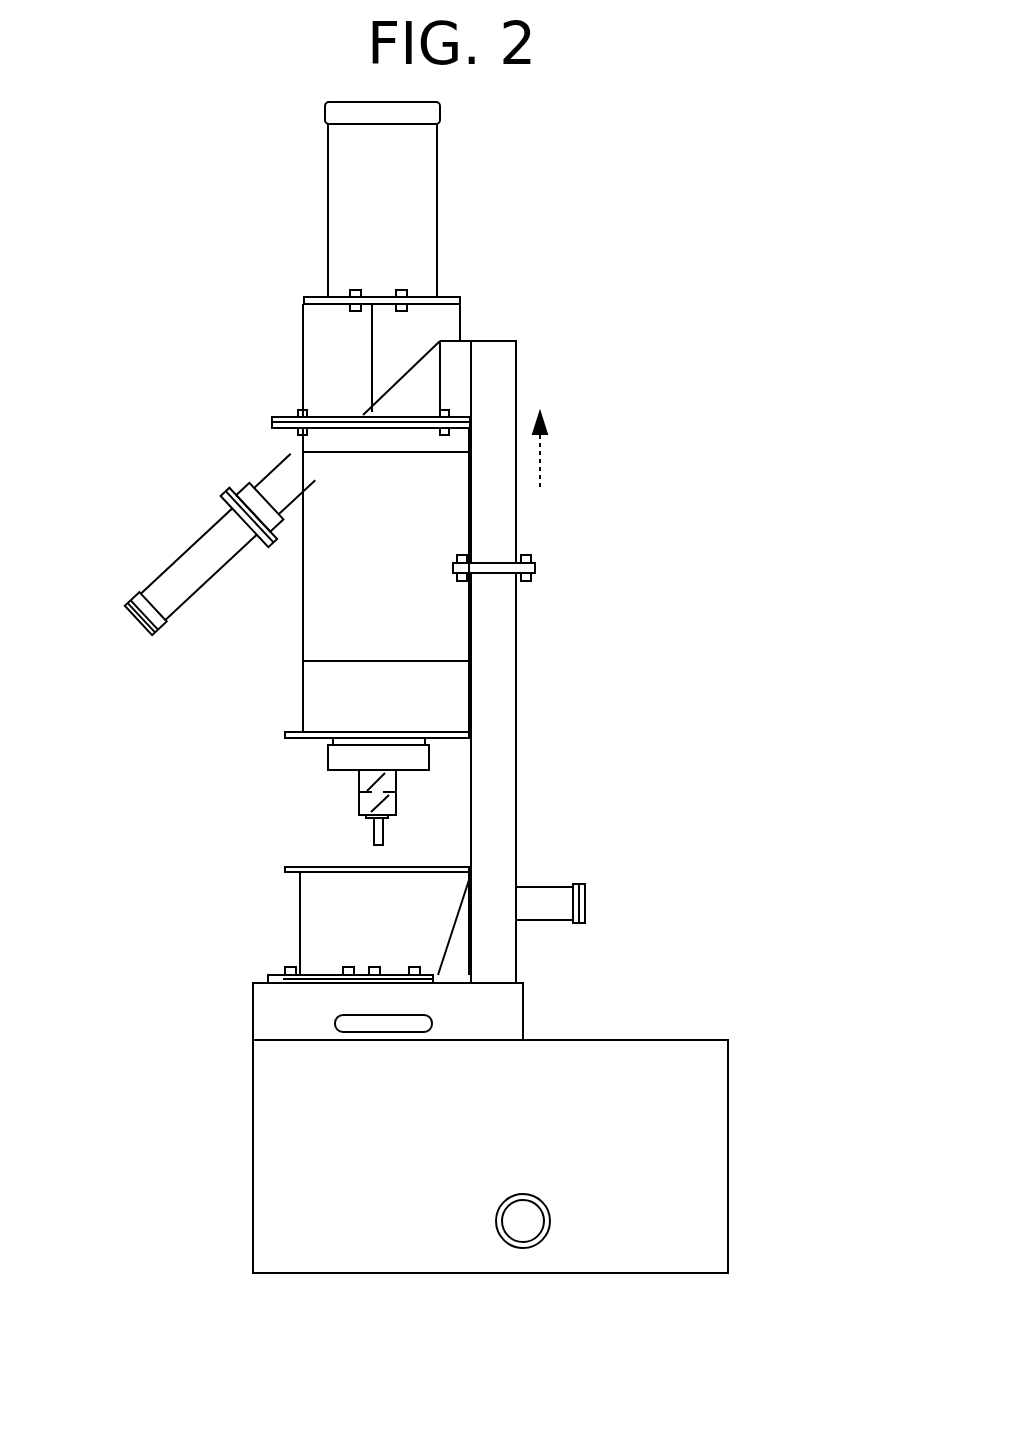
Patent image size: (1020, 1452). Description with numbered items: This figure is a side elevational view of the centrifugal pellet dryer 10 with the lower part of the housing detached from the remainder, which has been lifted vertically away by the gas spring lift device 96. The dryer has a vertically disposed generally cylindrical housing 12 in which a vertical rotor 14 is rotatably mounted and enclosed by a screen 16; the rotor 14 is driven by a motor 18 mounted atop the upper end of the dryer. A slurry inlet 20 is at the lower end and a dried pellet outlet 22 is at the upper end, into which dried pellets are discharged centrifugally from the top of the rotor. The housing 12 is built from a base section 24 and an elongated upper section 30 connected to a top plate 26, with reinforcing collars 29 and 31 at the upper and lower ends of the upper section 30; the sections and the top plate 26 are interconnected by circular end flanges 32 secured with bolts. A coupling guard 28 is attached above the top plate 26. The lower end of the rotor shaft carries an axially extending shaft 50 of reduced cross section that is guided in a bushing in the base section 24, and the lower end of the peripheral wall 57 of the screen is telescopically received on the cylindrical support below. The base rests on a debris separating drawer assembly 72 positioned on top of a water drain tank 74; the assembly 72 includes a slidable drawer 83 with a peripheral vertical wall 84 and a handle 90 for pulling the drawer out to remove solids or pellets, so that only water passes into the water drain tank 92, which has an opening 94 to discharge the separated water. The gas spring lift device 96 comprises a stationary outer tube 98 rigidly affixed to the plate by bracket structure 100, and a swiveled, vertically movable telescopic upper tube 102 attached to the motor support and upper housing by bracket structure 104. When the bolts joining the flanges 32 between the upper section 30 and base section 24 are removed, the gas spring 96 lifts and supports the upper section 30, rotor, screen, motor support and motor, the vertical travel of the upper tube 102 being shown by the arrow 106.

The centrifugal pellet dryer 10 is at (485, 295).
The housing 12 is at (322, 552).
The rotor 14 is at (345, 800).
The screen 16 is at (302, 752).
The motor 18 is at (418, 143).
The slurry inlet 20 is at (537, 895).
The dried pellet outlet 22 is at (190, 558).
The base section 24 is at (312, 938).
The top plate 26 is at (283, 418).
The coupling guard 28 is at (313, 331).
The reinforcing collar 29 is at (402, 438).
The upper section 30 is at (318, 645).
The reinforcing collar 31 is at (405, 672).
The circular end flanges 32 is at (280, 430).
The axially extending shaft 50 is at (372, 828).
The peripheral wall 57 is at (415, 757).
The debris separating drawer assembly 72 is at (540, 1000).
The water drain tank 74 is at (692, 1033).
The slidable drawer 83 is at (248, 1010).
The peripheral vertical wall 84 is at (294, 1030).
The handle 90 is at (378, 1027).
The water drain tank 92 is at (270, 1222).
The opening 94 is at (522, 1249).
The gas spring lift device 96 is at (545, 617).
The stationary outer tube 98 is at (508, 690).
The bracket structure 100 is at (460, 945).
The telescopic upper tube 102 is at (500, 397).
The bracket structure 104 is at (466, 354).
The arrow 106 is at (540, 450).